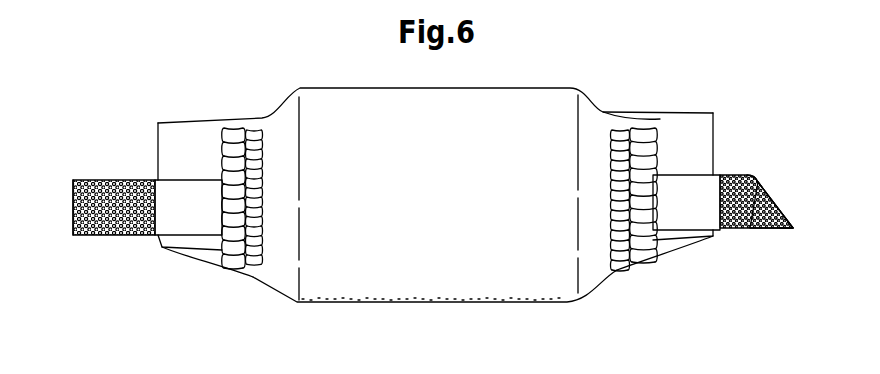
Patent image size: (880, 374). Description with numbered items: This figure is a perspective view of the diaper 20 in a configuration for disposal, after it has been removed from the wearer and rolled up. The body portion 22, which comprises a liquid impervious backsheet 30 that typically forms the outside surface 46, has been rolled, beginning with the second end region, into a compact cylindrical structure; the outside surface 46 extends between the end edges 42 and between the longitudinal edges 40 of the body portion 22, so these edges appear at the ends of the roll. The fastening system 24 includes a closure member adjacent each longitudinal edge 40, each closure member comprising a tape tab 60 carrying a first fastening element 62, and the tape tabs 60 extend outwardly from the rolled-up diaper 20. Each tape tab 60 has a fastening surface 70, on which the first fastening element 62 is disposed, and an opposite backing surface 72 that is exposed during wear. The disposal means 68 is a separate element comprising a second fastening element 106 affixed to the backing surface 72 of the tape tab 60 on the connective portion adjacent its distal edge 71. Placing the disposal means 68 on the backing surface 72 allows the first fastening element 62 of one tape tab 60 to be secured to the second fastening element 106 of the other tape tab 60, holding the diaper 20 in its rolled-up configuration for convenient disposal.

The diaper 20 is at (263, 82).
The body portion 22 is at (515, 103).
The fastening system 24 is at (128, 168).
The backsheet 30 is at (370, 283).
The longitudinal edge 40 is at (715, 123).
The end edge 42 is at (623, 112).
The outside surface 46 is at (443, 221).
The tape tab 60 is at (173, 215).
The first fastening element 62 is at (115, 224).
The disposal means 68 is at (753, 196).
The fastening surface 70 is at (110, 187).
The distal edge 71 is at (76, 208).
The backing surface 72 is at (780, 230).
The second fastening element 106 is at (770, 208).